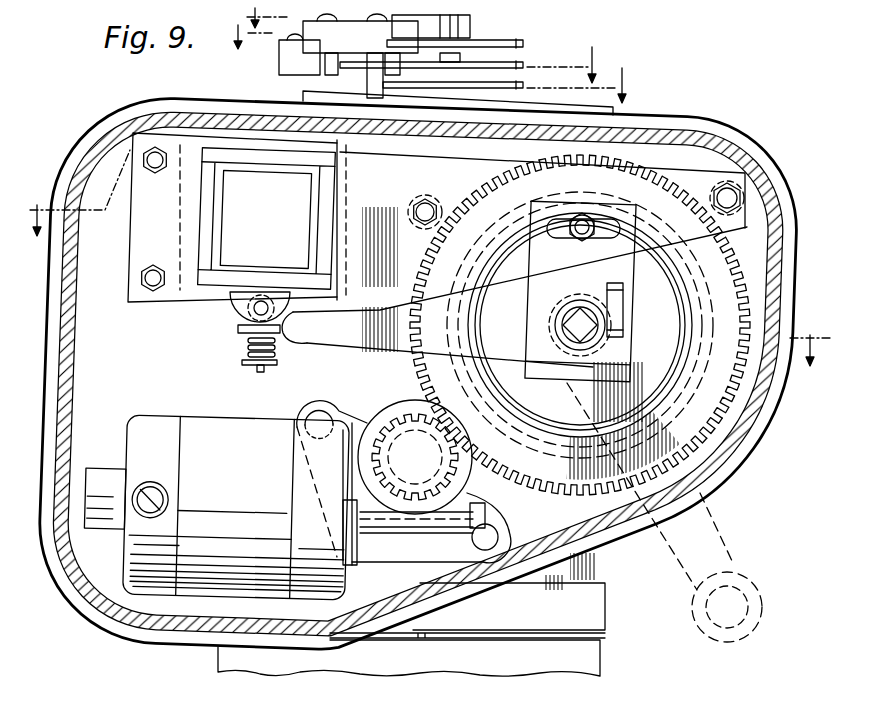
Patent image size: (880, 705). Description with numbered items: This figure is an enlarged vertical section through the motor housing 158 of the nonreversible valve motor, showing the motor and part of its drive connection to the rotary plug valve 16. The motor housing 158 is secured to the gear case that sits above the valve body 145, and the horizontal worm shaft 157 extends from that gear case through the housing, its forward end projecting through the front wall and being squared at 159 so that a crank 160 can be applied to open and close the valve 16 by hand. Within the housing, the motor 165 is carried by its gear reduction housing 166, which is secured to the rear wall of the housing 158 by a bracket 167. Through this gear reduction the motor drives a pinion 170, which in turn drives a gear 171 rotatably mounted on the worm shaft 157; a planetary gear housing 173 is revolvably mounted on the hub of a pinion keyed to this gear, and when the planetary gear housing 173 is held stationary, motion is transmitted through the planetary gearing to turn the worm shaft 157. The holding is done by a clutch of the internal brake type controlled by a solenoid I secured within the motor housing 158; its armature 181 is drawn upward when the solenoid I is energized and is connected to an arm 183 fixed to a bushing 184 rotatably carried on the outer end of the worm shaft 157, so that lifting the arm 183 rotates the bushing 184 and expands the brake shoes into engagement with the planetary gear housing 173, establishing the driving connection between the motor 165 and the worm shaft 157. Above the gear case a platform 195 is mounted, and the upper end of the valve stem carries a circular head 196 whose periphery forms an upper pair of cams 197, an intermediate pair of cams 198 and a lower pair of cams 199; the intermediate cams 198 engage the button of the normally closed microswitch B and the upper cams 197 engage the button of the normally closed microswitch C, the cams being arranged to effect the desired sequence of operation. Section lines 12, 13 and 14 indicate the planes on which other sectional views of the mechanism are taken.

The section line 12- 12 is at (429, 258).
The section line 13- 13 is at (419, 44).
The section line 14- 14 is at (439, 64).
The valve 16 is at (605, 663).
The valve body 145 is at (423, 668).
The worm shaft 157 is at (548, 323).
The motor housing 158 is at (730, 138).
The squared end 159 is at (612, 338).
The crank 160 is at (733, 553).
The motor 165 is at (211, 432).
The gear reduction housing 166 is at (388, 535).
The bracket 167 is at (303, 405).
The pinion 170 is at (370, 487).
The gear 171 is at (628, 388).
The planetary gear housing 173 is at (643, 377).
The armature 181 is at (240, 306).
The arm 183 is at (327, 342).
The bushing 184 is at (555, 343).
The platform 195 is at (375, 100).
The circular head 196 is at (457, 96).
The upper pair of salient counterpart cams 197 is at (518, 43).
The intermediate pair of salient counterpart cams 198 is at (524, 66).
The lower pair of salient counterpart cams 199 is at (517, 90).
The microswitch B is at (283, 66).
The microswitch C is at (360, 33).
The solenoid I is at (232, 217).